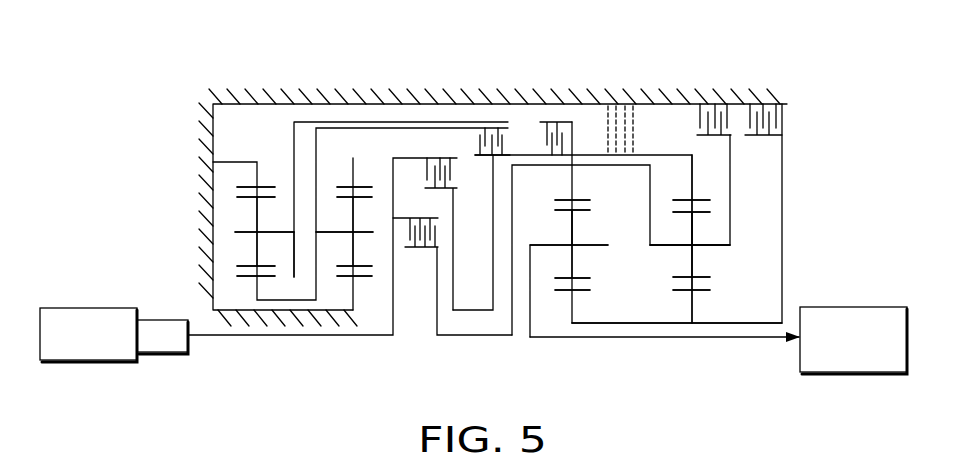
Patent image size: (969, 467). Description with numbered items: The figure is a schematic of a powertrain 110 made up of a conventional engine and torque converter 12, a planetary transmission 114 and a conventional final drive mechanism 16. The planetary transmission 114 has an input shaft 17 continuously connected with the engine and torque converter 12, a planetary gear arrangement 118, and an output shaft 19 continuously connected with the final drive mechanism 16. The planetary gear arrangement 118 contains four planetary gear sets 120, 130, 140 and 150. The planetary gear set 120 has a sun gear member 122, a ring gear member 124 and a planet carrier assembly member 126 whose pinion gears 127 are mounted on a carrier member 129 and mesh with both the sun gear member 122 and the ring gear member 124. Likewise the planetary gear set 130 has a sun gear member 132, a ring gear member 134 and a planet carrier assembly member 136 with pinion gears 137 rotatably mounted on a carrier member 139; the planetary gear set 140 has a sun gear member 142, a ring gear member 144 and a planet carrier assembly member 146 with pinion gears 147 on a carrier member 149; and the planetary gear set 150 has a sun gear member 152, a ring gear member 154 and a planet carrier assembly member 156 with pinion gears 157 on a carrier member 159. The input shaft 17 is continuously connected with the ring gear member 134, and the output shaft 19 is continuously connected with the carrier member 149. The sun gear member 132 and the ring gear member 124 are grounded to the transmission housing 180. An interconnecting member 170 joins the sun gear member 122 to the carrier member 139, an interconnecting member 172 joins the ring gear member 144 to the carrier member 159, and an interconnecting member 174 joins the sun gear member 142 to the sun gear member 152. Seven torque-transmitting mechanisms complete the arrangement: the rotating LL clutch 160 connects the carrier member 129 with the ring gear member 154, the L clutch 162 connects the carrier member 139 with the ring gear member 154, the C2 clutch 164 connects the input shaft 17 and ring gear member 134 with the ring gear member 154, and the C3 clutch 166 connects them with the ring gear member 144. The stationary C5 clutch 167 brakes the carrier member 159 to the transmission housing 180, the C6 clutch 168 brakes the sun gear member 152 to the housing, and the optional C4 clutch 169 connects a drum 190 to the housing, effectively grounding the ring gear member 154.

The engine and torque converter 12 is at (121, 298).
The final drive mechanism 16 is at (825, 291).
The input shaft 17 is at (203, 337).
The output shaft 19 is at (733, 339).
The powertrain 110 is at (188, 72).
The planetary transmission 114 is at (310, 70).
The planetary gear arrangement 118 is at (432, 68).
The planetary gear set 120 is at (237, 293).
The sun gear member 122 is at (265, 282).
The ring gear member 124 is at (238, 187).
The planet carrier assembly member 126 is at (241, 242).
The pinion gears 127 is at (242, 222).
The carrier member 129 is at (281, 180).
The planetary gear set 130 is at (342, 307).
The sun gear member 132 is at (365, 277).
The ring gear member 134 is at (348, 187).
The planet carrier assembly member 136 is at (345, 249).
The pinion gears 137 is at (356, 230).
The carrier member 139 is at (342, 224).
The planetary gear set 140 is at (552, 314).
The sun gear member 142 is at (584, 292).
The ring gear member 144 is at (564, 200).
The planet carrier assembly member 146 is at (583, 254).
The pinion gears 147 is at (572, 232).
The carrier member 149 is at (587, 245).
The planetary gear set 150 is at (668, 325).
The sun gear member 152 is at (703, 292).
The ring gear member 154 is at (677, 198).
The planet carrier assembly member 156 is at (704, 254).
The pinion gears 157 is at (690, 227).
The carrier member 159 is at (712, 243).
The LL clutch 160 is at (571, 136).
The L clutch 162 is at (513, 136).
The C2 clutch 164 is at (458, 185).
The C3 clutch 166 is at (402, 250).
The C5 clutch 167 is at (734, 120).
The C6 clutch 168 is at (784, 127).
The C4 clutch 169 is at (639, 120).
The interconnecting member 170 is at (293, 280).
The interconnecting member 172 is at (584, 168).
The interconnecting member 174 is at (645, 324).
The transmission housing 180 is at (203, 134).
The drum 190 is at (658, 154).